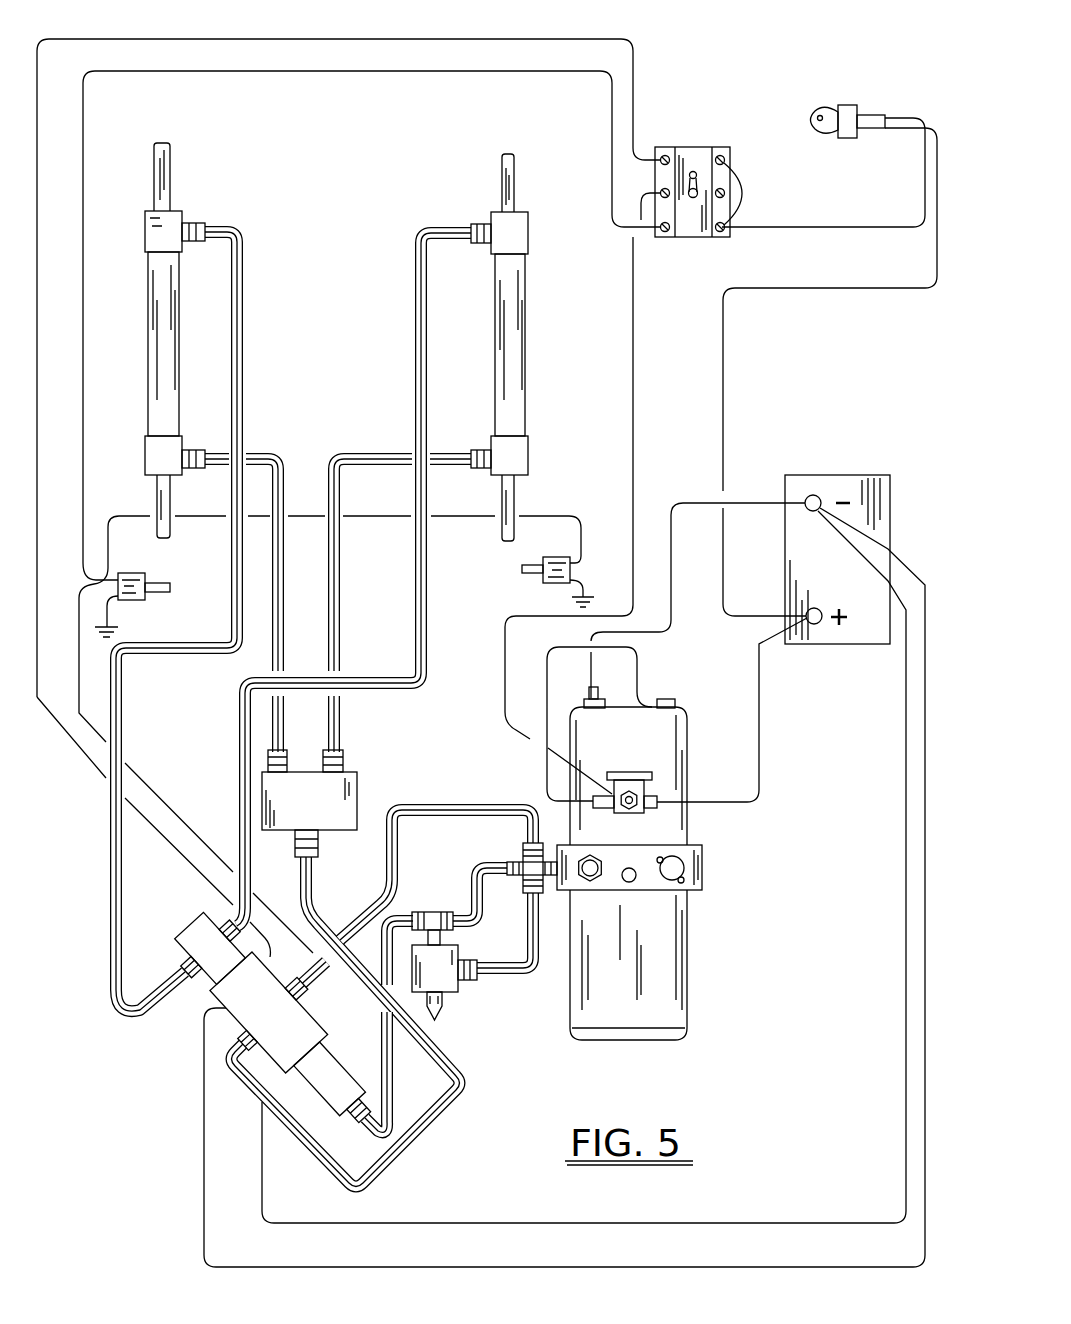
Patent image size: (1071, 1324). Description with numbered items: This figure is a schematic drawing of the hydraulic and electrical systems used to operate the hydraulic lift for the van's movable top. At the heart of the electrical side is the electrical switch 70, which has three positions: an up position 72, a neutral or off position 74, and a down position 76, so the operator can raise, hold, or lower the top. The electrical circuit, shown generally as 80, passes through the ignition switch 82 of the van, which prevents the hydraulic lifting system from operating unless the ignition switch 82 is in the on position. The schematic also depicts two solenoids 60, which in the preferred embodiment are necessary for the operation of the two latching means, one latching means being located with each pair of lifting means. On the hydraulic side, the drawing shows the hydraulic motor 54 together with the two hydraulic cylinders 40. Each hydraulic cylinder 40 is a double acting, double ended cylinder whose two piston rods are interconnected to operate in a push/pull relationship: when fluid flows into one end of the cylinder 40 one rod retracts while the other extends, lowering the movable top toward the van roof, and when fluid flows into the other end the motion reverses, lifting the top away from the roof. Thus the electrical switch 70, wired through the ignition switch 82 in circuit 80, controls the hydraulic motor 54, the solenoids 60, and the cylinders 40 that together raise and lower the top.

The electrical circuit 80 is at (440, 34).
The electrical switch 70 is at (693, 147).
The up position 72 is at (725, 161).
The neutral or off position 74 is at (725, 193).
The down position 76 is at (727, 230).
The ignition switch 82 is at (851, 104).
The hydraulic cylinder 40 is at (171, 341).
The solenoid 60 is at (136, 600).
The hydraulic motor 54 is at (687, 993).